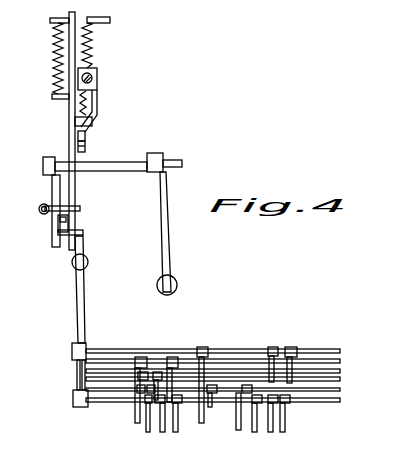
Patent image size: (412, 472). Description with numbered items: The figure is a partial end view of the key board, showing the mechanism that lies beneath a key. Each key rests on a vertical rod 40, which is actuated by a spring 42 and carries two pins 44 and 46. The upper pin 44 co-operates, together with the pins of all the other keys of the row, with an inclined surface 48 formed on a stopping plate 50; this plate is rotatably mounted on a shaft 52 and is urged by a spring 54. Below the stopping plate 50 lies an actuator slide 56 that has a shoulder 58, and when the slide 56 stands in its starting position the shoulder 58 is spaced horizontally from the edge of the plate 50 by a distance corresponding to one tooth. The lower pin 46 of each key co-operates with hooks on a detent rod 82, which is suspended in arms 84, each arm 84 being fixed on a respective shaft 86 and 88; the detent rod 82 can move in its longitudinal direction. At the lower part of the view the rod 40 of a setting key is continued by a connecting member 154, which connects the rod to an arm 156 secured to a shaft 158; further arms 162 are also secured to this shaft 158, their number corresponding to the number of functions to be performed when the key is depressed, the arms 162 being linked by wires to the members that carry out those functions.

The vertical rod 40 is at (76, 184).
The spring 42 is at (53, 48).
The pin 44 is at (77, 124).
The pin 46 is at (60, 219).
The inclined surface 48 is at (88, 132).
The stopping plate 50 is at (99, 107).
The shaft 52 is at (97, 77).
The spring 54 is at (92, 48).
The actuator slide 56 is at (86, 146).
The shoulder 58 is at (82, 147).
The detent rod 82 is at (62, 244).
The arm 84 is at (52, 190).
The shaft 86 is at (127, 167).
The shaft 88 is at (152, 242).
The push rod 154 is at (78, 313).
The arm 156 is at (72, 350).
The shaft 158 is at (108, 363).
The arm 162 is at (207, 408).